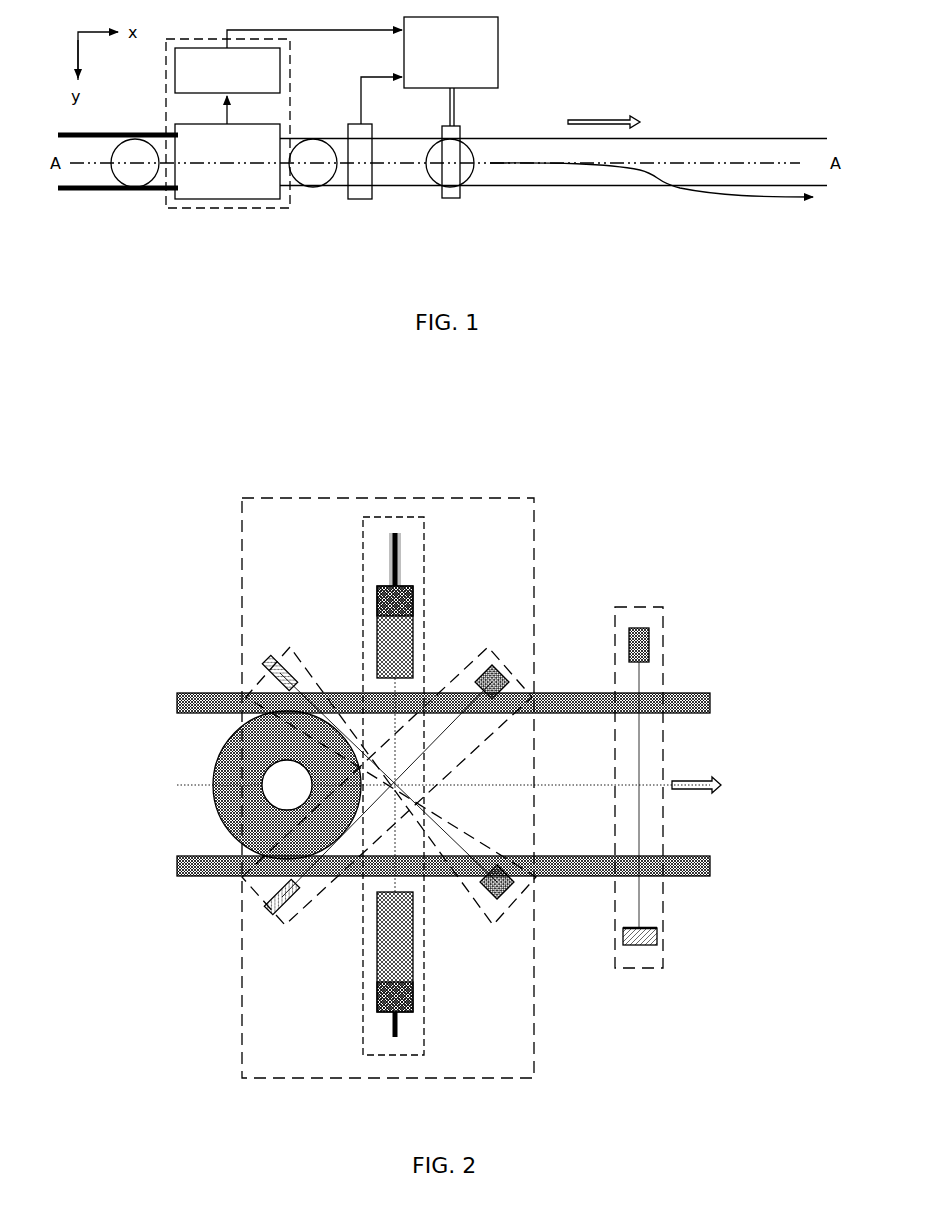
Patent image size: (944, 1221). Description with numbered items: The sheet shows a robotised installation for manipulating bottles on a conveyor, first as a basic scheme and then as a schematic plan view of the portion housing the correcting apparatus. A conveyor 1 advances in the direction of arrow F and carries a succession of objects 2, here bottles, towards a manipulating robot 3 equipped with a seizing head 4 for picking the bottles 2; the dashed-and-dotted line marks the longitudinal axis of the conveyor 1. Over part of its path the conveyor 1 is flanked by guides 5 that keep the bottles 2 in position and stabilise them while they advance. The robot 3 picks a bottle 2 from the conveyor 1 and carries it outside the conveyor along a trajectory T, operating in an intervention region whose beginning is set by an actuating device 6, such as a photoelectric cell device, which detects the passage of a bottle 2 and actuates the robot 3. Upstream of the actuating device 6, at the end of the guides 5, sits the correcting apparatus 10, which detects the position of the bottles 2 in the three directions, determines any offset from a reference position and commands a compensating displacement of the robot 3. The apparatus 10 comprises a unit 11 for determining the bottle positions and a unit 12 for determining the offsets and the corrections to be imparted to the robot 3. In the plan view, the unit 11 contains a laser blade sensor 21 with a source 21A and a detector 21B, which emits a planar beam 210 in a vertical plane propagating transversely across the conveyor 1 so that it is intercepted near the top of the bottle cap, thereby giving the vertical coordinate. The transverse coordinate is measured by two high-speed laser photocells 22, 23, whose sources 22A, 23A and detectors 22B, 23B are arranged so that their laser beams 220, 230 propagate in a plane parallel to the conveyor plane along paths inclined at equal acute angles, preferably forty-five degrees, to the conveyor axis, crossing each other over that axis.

In FIG. 1, the conveyor 1 is at (570, 180).
In FIG. 2, the conveyor 1 is at (697, 835).
In FIG. 1, the objects 2 is at (136, 170).
In FIG. 2, the objects 2 is at (224, 751).
In FIG. 1, the manipulating robot 3 is at (498, 63).
In FIG. 1, the seizing head 4 is at (452, 190).
In FIG. 1, the guides 5 is at (152, 195).
In FIG. 1, the actuating device 6 is at (353, 197).
In FIG. 2, the actuating device 6 is at (645, 607).
In FIG. 1, the correcting apparatus 10 is at (242, 210).
In FIG. 1, the unit for determining the positions of bottles 11 is at (202, 195).
In FIG. 2, the unit for determining the positions of bottles 11 is at (242, 575).
In FIG. 1, the unit for determining offsets and corrections 12 is at (280, 66).
In FIG. 2, the laser blade sensor 21 is at (424, 572).
In FIG. 2, the source 21A is at (377, 960).
In FIG. 2, the detector 21B is at (377, 605).
In FIG. 2, the laser photocell 22 is at (320, 893).
In FIG. 2, the source 22A is at (510, 668).
In FIG. 2, the detector 22B is at (280, 898).
In FIG. 2, the laser photocell 23 is at (465, 898).
In FIG. 2, the source 23A is at (500, 905).
In FIG. 2, the detector 23B is at (275, 675).
In FIG. 2, the planar beam 210 is at (394, 690).
In FIG. 2, the laser beam 220 is at (450, 733).
In FIG. 2, the laser beam 230 is at (450, 838).
In FIG. 1, the trajectory T is at (767, 197).
In FIG. 1, the advance direction F is at (604, 111).
In FIG. 2, the advance direction F is at (696, 774).